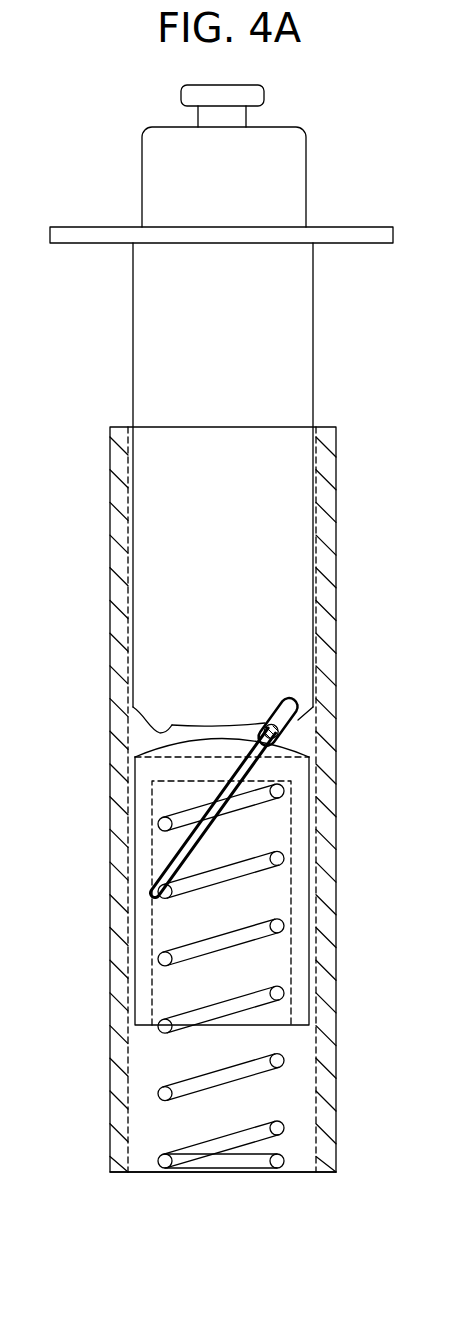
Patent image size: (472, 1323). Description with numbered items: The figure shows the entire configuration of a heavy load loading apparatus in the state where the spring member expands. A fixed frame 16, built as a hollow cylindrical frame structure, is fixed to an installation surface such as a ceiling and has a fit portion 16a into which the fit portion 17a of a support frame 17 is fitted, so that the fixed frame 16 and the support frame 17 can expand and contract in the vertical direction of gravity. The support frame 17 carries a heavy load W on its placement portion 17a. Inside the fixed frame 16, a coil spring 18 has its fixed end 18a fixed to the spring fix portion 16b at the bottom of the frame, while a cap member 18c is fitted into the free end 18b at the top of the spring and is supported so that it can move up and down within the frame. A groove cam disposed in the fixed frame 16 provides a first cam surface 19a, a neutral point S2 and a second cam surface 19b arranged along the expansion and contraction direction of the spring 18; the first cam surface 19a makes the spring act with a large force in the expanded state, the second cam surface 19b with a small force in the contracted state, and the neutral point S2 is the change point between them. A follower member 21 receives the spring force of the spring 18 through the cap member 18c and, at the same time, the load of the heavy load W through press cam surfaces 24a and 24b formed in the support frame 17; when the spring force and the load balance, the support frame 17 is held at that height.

The heavy load W is at (224, 156).
The fit portion / placement portion of support frame 17a is at (362, 232).
The support frame 17 is at (313, 318).
The fixed frame 16 is at (359, 502).
The fit portion of fixed frame 16a is at (314, 1072).
The spring fix portion 16b is at (295, 1165).
The coil spring 18 is at (283, 1013).
The fixed end of coil spring 18a is at (215, 1165).
The free end of coil spring 18b is at (247, 803).
The cap member 18c is at (322, 896).
The first cam surface 19a is at (298, 750).
The second cam surface 19b is at (162, 865).
The follower member 21 is at (292, 706).
The press cam surface 24a is at (296, 728).
The press cam surface 24b is at (158, 731).
The neutral point S2 is at (217, 807).